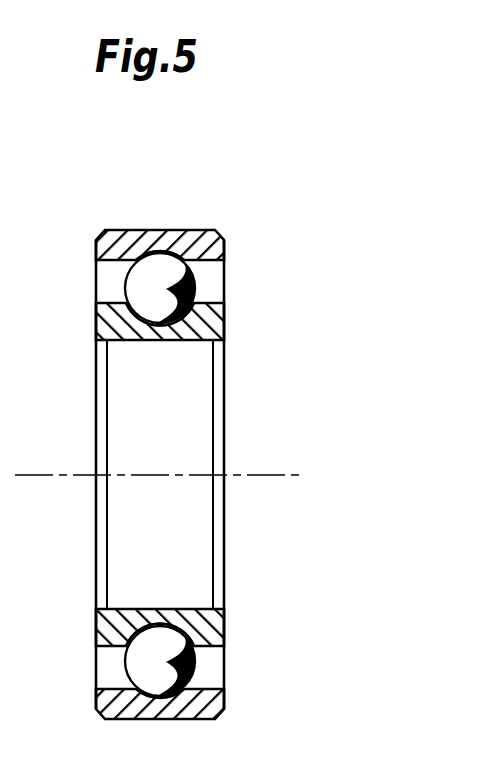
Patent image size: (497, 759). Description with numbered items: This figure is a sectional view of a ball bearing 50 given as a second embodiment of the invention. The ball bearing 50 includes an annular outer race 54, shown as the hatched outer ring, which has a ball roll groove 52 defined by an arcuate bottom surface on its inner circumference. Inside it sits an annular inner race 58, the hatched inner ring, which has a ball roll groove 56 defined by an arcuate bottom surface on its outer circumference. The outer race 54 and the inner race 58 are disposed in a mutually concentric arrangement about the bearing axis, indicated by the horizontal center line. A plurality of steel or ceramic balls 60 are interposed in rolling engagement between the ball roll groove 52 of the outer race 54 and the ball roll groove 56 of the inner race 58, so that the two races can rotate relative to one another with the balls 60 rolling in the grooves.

The ball bearing 50 is at (172, 449).
The ball roll groove 52 is at (161, 250).
The annular outer race 54 is at (127, 242).
The ball roll groove 56 is at (97, 323).
The annular inner race 58 is at (215, 317).
The balls 60 is at (133, 283).